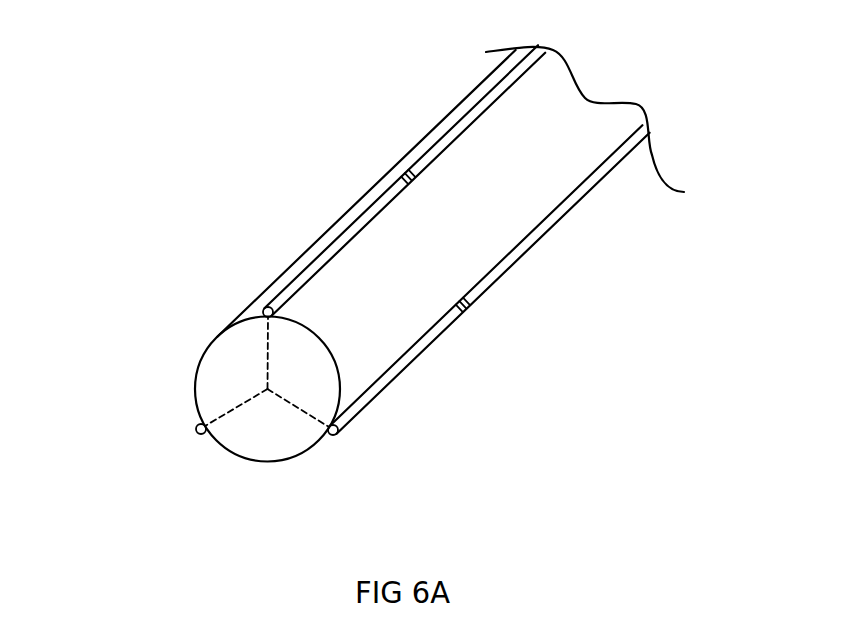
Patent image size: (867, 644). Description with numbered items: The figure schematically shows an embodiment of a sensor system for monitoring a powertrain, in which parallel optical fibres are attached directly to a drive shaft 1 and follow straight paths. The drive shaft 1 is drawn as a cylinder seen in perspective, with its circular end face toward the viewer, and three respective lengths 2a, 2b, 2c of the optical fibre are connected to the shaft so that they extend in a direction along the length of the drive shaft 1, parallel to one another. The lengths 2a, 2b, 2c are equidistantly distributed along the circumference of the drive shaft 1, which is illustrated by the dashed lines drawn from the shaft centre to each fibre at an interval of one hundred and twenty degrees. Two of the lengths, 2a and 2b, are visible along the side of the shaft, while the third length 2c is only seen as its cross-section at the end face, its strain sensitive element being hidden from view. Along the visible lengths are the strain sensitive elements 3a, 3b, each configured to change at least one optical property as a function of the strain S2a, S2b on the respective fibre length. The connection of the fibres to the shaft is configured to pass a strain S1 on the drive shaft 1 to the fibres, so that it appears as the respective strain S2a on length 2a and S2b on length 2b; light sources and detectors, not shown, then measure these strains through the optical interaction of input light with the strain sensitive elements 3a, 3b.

The drive shaft 1 is at (307, 256).
The first length of optical fibre 2a is at (393, 181).
The second length of optical fibre 2b is at (489, 281).
The third length of optical fibre 2c is at (184, 432).
The strain sensitive element 3a is at (406, 168).
The strain sensitive element 3b is at (488, 307).
The strain on the drive shaft S1 is at (366, 193).
The strain on the first fibre length S2a is at (433, 112).
The strain on the second fibre length S2b is at (575, 298).